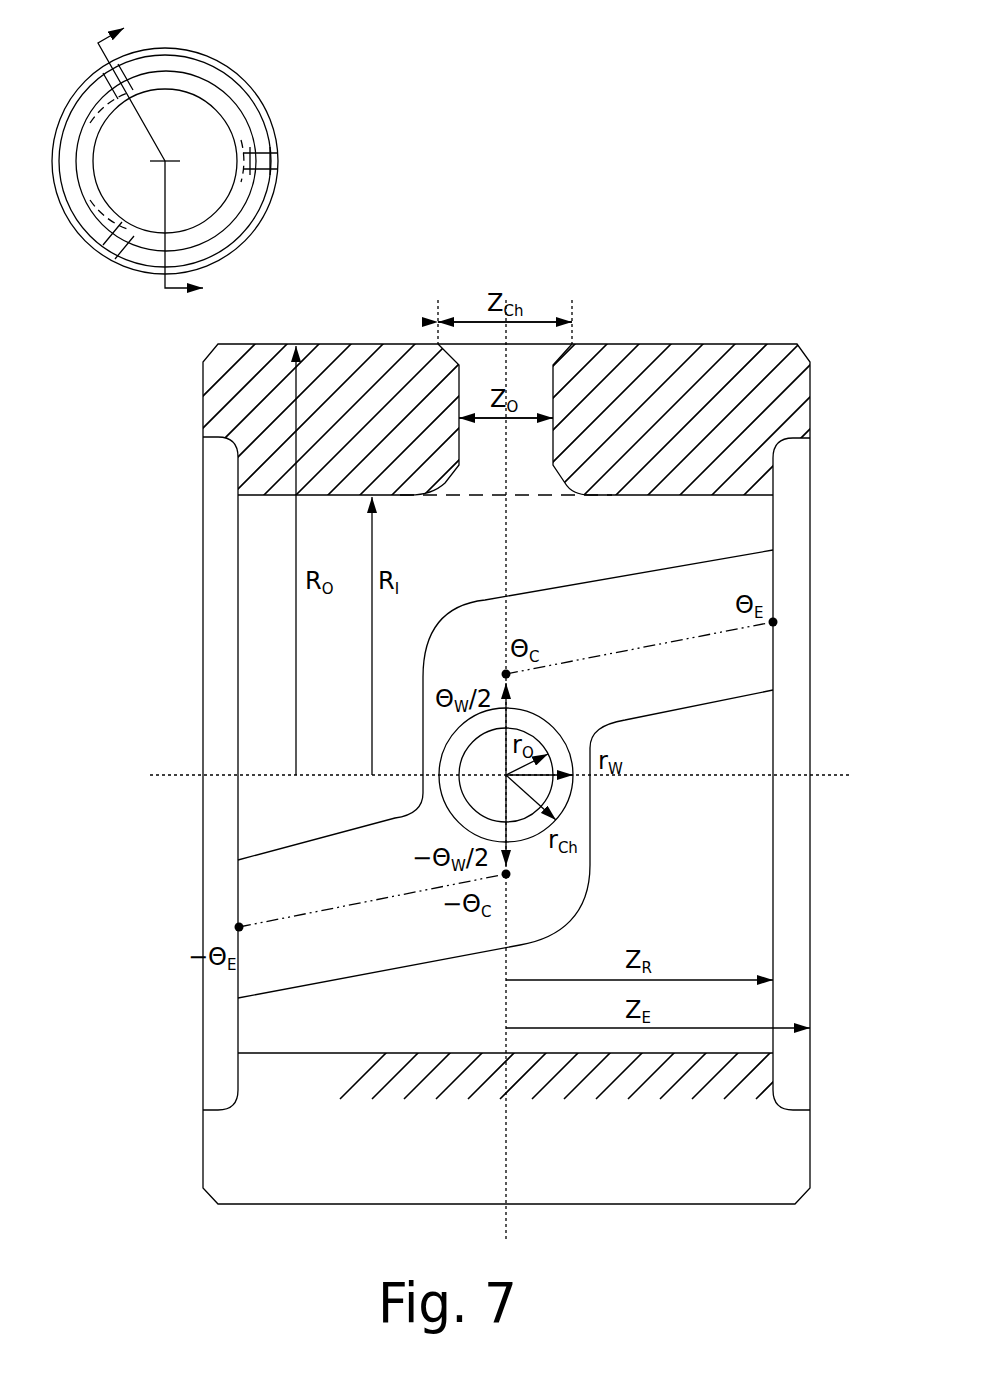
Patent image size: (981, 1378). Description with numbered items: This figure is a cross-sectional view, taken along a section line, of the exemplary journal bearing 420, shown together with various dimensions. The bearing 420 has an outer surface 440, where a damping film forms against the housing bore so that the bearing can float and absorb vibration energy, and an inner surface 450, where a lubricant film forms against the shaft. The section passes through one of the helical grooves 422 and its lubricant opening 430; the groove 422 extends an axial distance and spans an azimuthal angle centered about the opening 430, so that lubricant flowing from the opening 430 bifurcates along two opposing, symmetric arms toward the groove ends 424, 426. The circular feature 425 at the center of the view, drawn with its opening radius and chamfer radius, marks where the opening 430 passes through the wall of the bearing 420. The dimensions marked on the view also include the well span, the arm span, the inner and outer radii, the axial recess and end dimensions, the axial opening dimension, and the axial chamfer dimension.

The journal bearing 420 is at (596, 182).
The helical groove 422 is at (522, 592).
The groove end 424 is at (238, 883).
The central bore 425 is at (570, 797).
The groove end 426 is at (773, 582).
The lubricant opening 430 is at (440, 345).
The outer surface 440 is at (342, 344).
The inner surface 450 is at (633, 495).